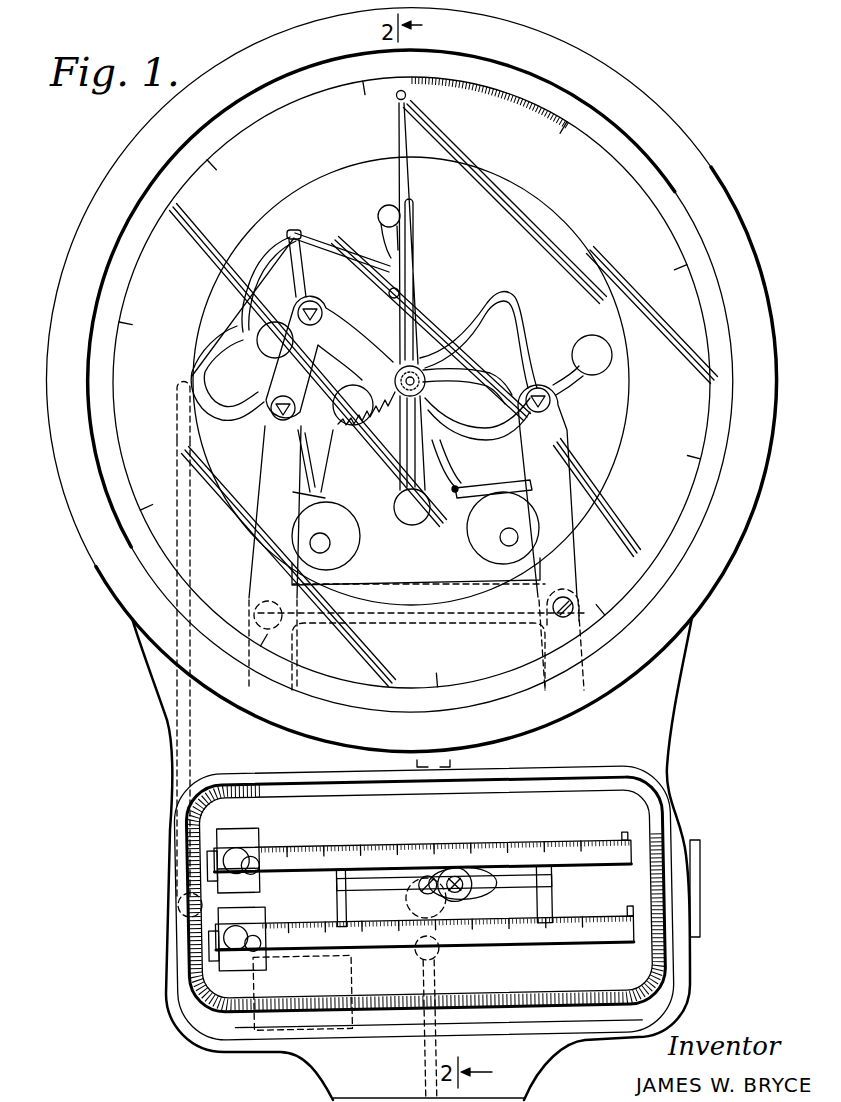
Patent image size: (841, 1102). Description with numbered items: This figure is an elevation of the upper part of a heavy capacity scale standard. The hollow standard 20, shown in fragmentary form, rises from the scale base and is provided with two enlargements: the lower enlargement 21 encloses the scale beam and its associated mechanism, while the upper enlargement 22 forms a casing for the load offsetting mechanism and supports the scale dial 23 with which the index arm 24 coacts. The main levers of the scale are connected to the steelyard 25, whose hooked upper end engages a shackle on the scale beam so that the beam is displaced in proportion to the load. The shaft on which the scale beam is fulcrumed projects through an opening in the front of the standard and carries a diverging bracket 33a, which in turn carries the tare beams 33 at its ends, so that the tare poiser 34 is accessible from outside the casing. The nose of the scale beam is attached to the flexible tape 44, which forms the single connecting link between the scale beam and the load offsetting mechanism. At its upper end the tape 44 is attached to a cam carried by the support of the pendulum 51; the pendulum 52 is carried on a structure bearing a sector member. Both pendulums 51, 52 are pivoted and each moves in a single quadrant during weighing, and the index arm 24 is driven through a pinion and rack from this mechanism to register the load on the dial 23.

The hollow standard 20 is at (533, 1050).
The enlargement 21 is at (623, 903).
The enlargement 22 is at (638, 217).
The scale dial 23 is at (537, 100).
The index arm 24 is at (406, 190).
The steelyard 25 is at (427, 1048).
The tare beams 33 is at (617, 852).
The diverging bracket 33a is at (527, 895).
The tare poiser 34 is at (237, 835).
The tape 44 is at (187, 713).
The pendulum 51 is at (343, 552).
The pendulum 52 is at (488, 538).